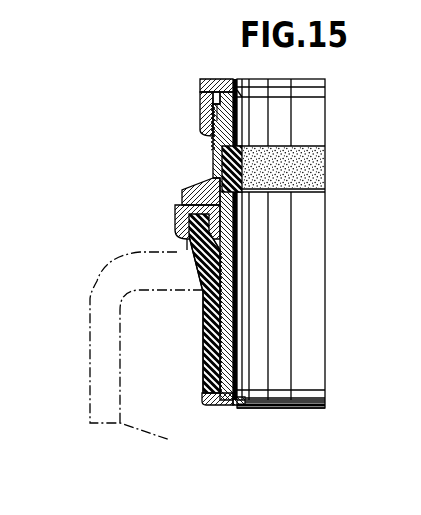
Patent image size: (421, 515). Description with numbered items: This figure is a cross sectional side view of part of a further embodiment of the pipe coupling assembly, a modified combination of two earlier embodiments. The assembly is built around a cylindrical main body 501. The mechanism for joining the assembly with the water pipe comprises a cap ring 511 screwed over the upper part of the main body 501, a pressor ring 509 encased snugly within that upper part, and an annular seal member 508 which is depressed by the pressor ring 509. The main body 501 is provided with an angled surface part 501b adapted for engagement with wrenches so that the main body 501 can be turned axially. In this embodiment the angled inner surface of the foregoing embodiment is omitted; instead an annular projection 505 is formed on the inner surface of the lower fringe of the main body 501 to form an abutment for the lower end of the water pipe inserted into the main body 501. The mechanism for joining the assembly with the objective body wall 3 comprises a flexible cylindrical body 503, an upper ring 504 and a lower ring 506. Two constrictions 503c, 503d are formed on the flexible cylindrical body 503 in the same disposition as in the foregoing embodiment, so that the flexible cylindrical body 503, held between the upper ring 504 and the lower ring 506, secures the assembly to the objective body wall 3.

The objective body wall 3 is at (95, 280).
The cylindrical main body 501 is at (208, 183).
The angled surface part 501b is at (182, 193).
The flexible cylindrical body 503 is at (203, 331).
The constriction 503c is at (204, 294).
The constriction 503d is at (203, 358).
The upper ring 504 is at (176, 222).
The annular projection 505 is at (241, 408).
The lower ring 506 is at (214, 405).
The annular seal member 508 is at (227, 166).
The pressor ring 509 is at (228, 113).
The cap ring 511 is at (213, 79).